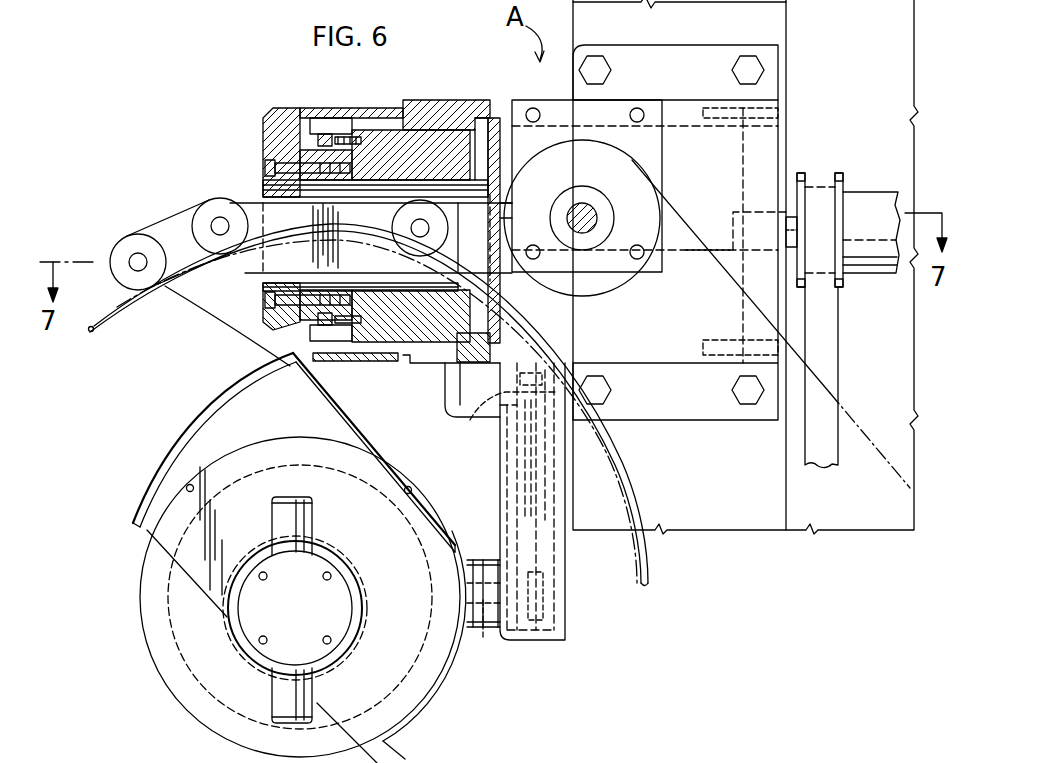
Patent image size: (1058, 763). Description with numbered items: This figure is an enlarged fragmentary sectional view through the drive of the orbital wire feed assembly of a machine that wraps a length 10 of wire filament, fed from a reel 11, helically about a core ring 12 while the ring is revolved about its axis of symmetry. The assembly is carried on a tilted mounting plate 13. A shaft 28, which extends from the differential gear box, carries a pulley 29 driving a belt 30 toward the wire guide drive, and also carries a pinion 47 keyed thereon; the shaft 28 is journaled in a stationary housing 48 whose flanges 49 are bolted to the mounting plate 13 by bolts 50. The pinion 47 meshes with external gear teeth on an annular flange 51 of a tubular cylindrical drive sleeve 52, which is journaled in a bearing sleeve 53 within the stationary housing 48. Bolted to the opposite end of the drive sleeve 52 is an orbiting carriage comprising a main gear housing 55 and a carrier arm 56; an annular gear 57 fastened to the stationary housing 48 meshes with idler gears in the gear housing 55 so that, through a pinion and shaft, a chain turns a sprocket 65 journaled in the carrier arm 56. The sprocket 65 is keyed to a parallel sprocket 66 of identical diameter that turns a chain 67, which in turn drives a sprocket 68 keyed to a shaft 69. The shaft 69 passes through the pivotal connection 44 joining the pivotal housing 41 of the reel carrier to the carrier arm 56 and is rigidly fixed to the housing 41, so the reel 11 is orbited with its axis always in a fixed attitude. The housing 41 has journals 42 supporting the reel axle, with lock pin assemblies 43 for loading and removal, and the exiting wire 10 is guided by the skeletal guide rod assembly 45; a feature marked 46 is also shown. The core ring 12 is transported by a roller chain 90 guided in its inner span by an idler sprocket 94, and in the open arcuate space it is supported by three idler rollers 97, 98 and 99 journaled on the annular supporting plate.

The length of wire filament 10 is at (248, 338).
The reel 11 is at (190, 713).
The core ring 12 is at (645, 574).
The mounting plate 13 is at (744, 532).
The shaft 28 is at (714, 212).
The pulley 29 is at (843, 180).
The belt 30 is at (838, 335).
The pivotal housing 41 is at (410, 738).
The journals 42 is at (243, 637).
The lock pin assemblies 43 is at (272, 525).
The pivotal connection 44 is at (478, 560).
The skeletal guide rod assembly 45 is at (243, 388).
The slots 46 is at (221, 523).
The pinion 47 is at (506, 194).
The stationary housing 48 is at (443, 100).
The flanges 49 is at (712, 45).
The bolts 50 is at (732, 70).
The annular flange 51 is at (501, 125).
The drive sleeve 52 is at (423, 340).
The bearing sleeve 53 is at (376, 318).
The main gear housing 55 is at (267, 125).
The carrier arm 56 is at (568, 590).
The annular gear 57 is at (330, 118).
The sprocket 65 is at (562, 428).
The parallel sprocket 66 is at (492, 413).
The chain 67 is at (532, 528).
The sprocket 68 is at (538, 625).
The shaft 69 is at (483, 640).
The roller chain 90 is at (876, 462).
The idler sprocket 94 is at (655, 283).
The idler roller 97 is at (130, 245).
The idler roller 98 is at (216, 205).
The idler roller 99 is at (403, 224).